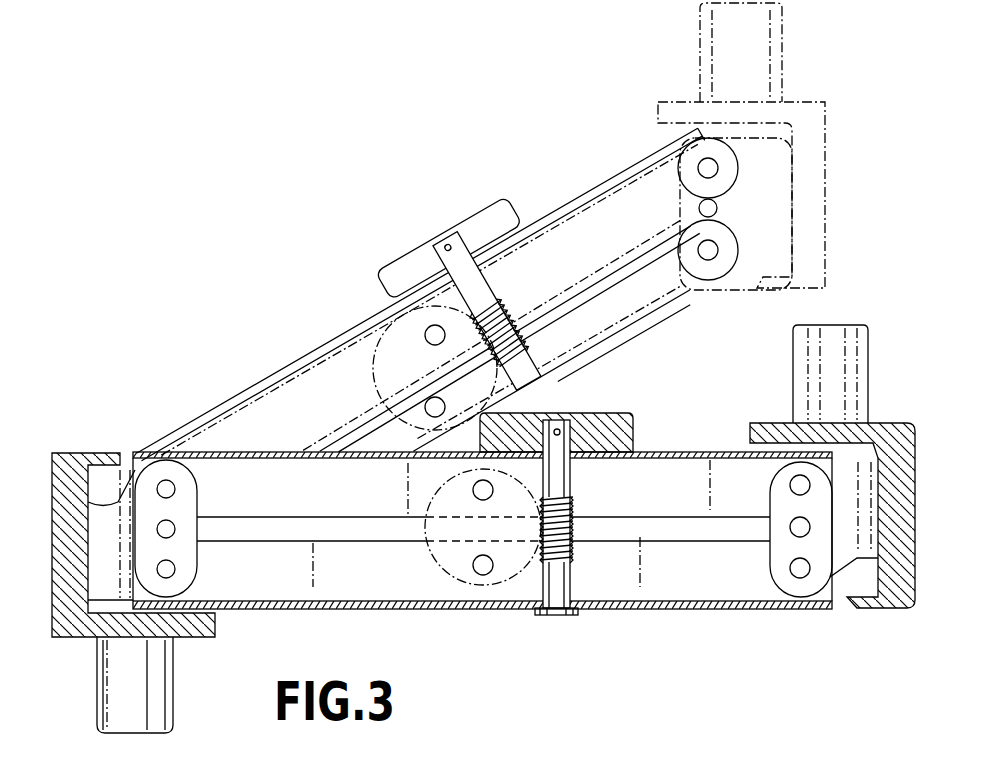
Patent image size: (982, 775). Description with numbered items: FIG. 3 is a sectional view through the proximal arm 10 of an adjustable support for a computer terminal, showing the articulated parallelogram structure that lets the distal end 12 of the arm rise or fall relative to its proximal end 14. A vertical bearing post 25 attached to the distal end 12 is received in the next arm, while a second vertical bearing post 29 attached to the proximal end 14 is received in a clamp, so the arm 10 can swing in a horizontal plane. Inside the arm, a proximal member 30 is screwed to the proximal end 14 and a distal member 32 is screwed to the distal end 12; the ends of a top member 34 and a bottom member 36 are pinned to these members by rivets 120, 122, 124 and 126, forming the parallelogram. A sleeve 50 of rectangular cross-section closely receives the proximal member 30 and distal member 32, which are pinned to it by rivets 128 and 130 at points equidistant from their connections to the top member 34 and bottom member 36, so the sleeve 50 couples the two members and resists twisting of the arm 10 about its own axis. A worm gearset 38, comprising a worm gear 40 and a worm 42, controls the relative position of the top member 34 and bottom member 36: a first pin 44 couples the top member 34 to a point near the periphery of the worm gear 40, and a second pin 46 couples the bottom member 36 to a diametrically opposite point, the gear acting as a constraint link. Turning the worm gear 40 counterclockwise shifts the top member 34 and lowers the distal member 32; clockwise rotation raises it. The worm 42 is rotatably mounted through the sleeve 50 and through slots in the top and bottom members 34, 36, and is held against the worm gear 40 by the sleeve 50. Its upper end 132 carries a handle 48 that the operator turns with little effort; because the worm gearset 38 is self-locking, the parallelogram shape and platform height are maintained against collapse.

The proximal arm 10 is at (673, 658).
The distal end 12 is at (916, 431).
The proximal end 14 is at (52, 473).
The vertical bearing post 25 is at (794, 363).
The second vertical bearing post 29 is at (175, 703).
The proximal member 30 is at (100, 538).
The distal member 32 is at (873, 523).
The top member 34 is at (328, 502).
The bottom member 36 is at (697, 558).
The worm gearset 38 is at (561, 617).
The worm gear 40 is at (438, 572).
The worm 42 is at (571, 585).
The first pin 44 is at (474, 492).
The second pin 46 is at (474, 563).
The handle 48 is at (637, 428).
The sleeve 50 is at (727, 447).
The rivet 120 is at (176, 489).
The rivet 122 is at (789, 487).
The rivet 124 is at (176, 569).
The rivet 126 is at (789, 573).
The rivet 128 is at (176, 528).
The rivet 130 is at (789, 525).
The upper end 132 is at (585, 413).